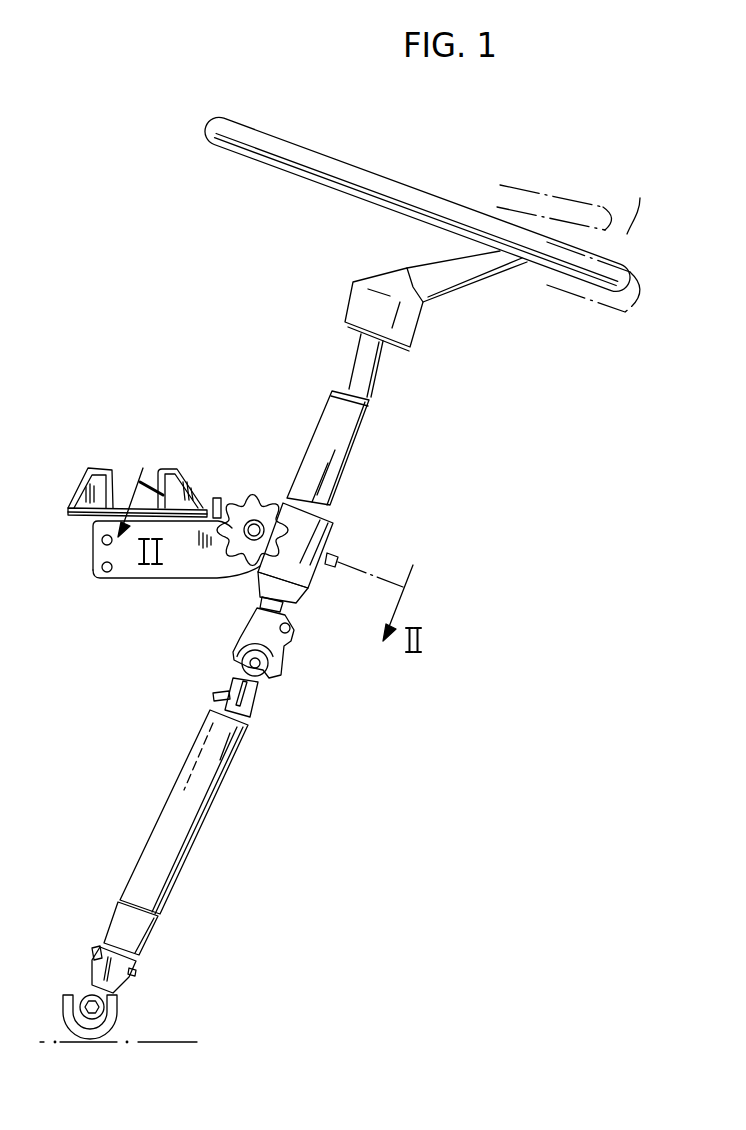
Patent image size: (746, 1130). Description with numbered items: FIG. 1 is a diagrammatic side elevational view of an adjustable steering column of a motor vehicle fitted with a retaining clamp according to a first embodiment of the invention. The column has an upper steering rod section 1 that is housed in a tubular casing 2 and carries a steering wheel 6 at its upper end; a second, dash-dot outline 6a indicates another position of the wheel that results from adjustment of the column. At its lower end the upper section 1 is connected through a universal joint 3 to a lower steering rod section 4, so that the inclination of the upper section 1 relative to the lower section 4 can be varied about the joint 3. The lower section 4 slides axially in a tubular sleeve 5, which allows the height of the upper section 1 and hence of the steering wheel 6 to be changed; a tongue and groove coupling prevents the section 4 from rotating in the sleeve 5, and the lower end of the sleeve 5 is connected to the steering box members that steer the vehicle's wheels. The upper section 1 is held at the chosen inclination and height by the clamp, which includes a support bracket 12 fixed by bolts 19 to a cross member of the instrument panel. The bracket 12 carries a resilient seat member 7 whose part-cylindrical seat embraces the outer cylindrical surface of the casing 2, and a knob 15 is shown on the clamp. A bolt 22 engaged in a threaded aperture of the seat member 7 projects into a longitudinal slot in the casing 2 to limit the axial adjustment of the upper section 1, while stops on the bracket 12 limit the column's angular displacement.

The upper steering rod section 1 is at (365, 353).
The tubular casing 2 is at (320, 420).
The universal joint 3 is at (285, 664).
The lower steering rod section 4 is at (240, 755).
The tubular sleeve 5 is at (155, 825).
The steering wheel 6 is at (256, 127).
The handlebar alternate position 6a is at (608, 210).
The resilient seat member 7 is at (334, 532).
The support bracket 12 is at (173, 578).
The knob 15 is at (256, 495).
The bolts 19 is at (102, 544).
The bolt 22 is at (338, 559).